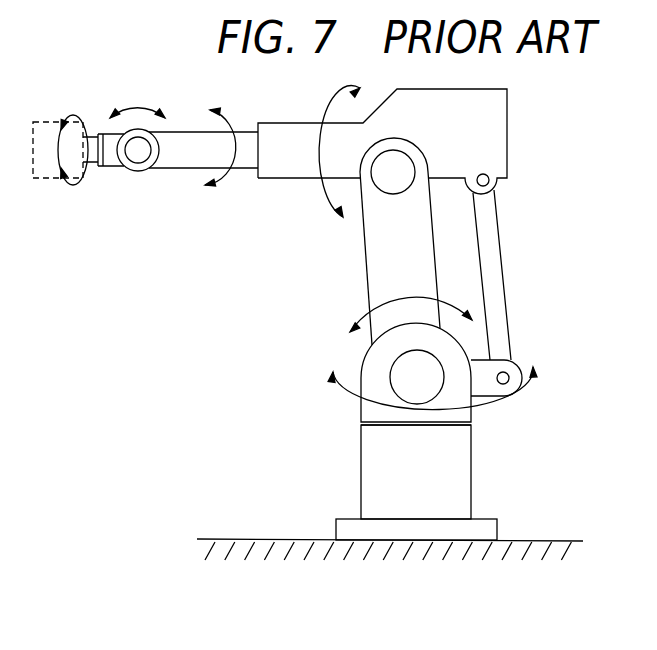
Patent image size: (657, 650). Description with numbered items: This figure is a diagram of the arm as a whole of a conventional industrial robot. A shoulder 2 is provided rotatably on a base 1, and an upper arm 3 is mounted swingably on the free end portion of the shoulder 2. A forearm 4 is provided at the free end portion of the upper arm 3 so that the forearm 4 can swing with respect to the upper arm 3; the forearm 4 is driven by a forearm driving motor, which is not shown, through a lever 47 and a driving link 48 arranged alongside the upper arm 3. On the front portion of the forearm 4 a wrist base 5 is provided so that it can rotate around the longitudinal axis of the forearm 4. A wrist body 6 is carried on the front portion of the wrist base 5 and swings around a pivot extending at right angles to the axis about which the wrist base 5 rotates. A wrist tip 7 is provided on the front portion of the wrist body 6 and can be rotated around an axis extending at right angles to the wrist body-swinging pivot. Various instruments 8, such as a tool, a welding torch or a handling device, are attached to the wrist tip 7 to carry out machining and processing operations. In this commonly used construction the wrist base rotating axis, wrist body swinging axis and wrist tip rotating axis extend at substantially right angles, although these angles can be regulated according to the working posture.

The base 1 is at (380, 475).
The shoulder 2 is at (377, 370).
The upper arm 3 is at (376, 262).
The forearm 4 is at (288, 162).
The wrist base 5 is at (182, 142).
The wrist body 6 is at (108, 160).
The wrist tip 7 is at (91, 137).
The instruments 8 is at (47, 180).
The lever 47 is at (490, 372).
The driving link 48 is at (500, 331).